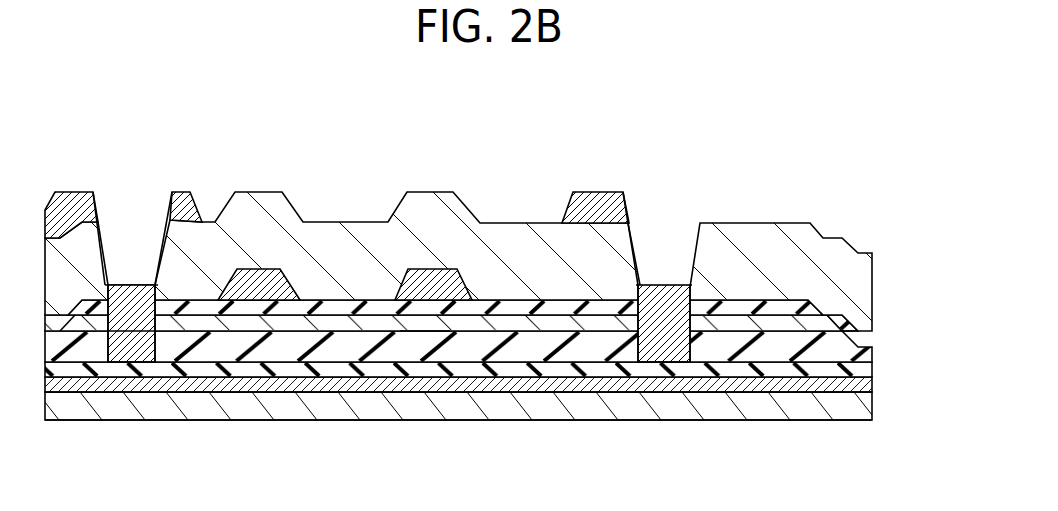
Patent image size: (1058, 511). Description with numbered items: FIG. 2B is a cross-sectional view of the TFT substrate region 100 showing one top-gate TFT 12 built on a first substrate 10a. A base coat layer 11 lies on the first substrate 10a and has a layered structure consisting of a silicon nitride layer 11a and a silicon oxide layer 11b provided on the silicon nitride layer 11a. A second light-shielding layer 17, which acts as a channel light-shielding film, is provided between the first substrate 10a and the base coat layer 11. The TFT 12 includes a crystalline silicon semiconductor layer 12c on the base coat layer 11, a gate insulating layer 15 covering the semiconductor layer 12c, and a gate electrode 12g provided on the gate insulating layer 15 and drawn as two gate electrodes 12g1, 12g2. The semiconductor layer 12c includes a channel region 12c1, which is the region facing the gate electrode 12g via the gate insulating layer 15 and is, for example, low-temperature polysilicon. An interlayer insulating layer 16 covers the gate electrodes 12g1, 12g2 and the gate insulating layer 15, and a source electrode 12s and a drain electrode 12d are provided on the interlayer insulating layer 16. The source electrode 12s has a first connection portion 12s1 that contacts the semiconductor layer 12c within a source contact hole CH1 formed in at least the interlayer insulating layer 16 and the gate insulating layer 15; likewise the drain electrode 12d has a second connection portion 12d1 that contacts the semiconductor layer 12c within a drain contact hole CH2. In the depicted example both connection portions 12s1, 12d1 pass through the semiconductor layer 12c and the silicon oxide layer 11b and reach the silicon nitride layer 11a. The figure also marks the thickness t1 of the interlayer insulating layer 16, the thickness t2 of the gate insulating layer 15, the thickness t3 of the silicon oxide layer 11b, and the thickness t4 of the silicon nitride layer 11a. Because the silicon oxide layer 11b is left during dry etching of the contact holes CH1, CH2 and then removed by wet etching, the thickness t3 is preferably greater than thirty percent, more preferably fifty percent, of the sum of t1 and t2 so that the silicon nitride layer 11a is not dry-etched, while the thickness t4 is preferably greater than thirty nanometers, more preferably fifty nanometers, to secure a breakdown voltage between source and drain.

The display device / thin film transistor substrate 100 is at (848, 147).
The first substrate 10a is at (872, 413).
The base coat layer 11 is at (502, 370).
The silicon nitride layer 11a is at (872, 387).
The silicon oxide layer 11b is at (872, 364).
The TFT 12 is at (346, 247).
The crystalline silicon semiconductor layer 12c is at (323, 323).
The channel region 12c1 is at (250, 332).
The gate electrode 12g is at (365, 203).
The gate electrode 12g1 is at (248, 270).
The gate electrode 12g2 is at (422, 270).
The source electrode 12s is at (72, 192).
The first connection portion 12s1 is at (129, 332).
The drain electrode 12d is at (594, 192).
The second connection portion 12d1 is at (665, 332).
The gate insulating layer 15 is at (475, 313).
The interlayer insulating layer 16 is at (755, 255).
The second light-shielding layer 17 is at (575, 393).
The source contact hole CH1 is at (133, 260).
The drain contact hole CH2 is at (665, 260).
The thickness of the interlayer insulating layer t1 is at (513, 223).
The thickness of the gate insulating layer t2 is at (513, 300).
The thickness of the silicon oxide layer t3 is at (513, 331).
The thickness of the silicon nitride layer t4 is at (513, 362).